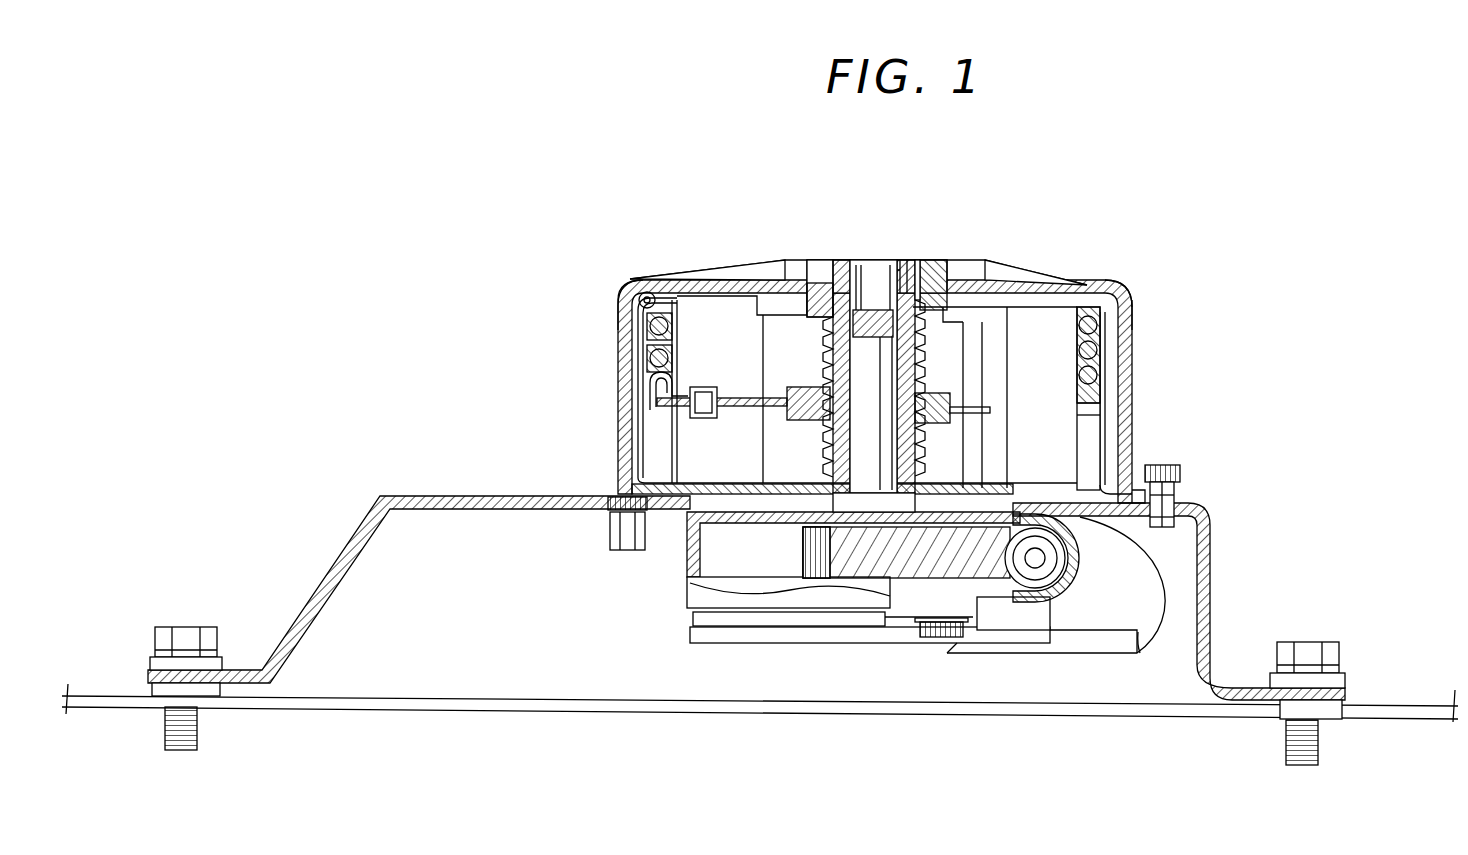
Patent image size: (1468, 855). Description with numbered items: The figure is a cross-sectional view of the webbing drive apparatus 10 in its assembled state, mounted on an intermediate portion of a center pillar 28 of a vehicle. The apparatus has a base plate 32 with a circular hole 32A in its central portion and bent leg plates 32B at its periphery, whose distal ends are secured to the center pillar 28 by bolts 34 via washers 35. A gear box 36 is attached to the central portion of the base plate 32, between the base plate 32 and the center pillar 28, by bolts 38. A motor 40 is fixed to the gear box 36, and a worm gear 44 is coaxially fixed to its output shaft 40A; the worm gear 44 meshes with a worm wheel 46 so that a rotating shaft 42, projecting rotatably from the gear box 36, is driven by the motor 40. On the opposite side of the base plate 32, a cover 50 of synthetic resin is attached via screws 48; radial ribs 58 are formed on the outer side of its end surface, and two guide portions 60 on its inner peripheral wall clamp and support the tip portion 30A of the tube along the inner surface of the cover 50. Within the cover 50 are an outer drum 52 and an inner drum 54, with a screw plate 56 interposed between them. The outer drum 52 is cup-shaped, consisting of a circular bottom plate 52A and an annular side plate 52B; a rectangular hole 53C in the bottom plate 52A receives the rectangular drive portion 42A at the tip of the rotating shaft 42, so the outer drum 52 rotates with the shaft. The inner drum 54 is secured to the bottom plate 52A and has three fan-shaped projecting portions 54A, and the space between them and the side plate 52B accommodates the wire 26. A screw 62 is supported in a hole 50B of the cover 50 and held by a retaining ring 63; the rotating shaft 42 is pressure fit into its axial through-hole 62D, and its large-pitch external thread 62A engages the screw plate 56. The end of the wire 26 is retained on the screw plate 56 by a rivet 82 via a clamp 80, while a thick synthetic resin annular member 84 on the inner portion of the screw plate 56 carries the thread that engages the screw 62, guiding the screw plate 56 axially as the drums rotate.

The webbing drive apparatus 10 is at (1165, 178).
The wire 26 is at (633, 283).
The center pillar 28 is at (1100, 714).
The tip portion of the tube 30A is at (670, 278).
The base plate 32 is at (335, 560).
The circular hole 32A is at (738, 483).
The leg plates 32B is at (240, 690).
The bolts 34 is at (186, 627).
The washers 35 is at (150, 663).
The gear box 36 is at (815, 645).
The bolts 38 is at (628, 552).
The motor 40 is at (1043, 657).
The output shaft 40A is at (1138, 632).
The rotating shaft 42 is at (800, 300).
The drive portion 42A is at (837, 500).
The worm gear 44 is at (1082, 548).
The worm wheel 46 is at (943, 605).
The screws 48 is at (1160, 463).
The cover 50 is at (737, 275).
The hole 50B is at (925, 265).
The outer drum 52 is at (1103, 395).
The bottom plate 52A is at (1077, 482).
The side plate 52B is at (1127, 438).
The rectangular hole 53C is at (867, 498).
The inner drum 54 is at (1128, 412).
The projecting portions 54A is at (700, 296).
The screw plate 56 is at (638, 306).
The ribs 58 is at (778, 268).
The guide portions 60 is at (650, 282).
The screw 62 is at (905, 270).
The external thread 62A is at (1005, 310).
The through-hole 62D is at (895, 265).
The retaining ring 63 is at (843, 255).
The clamp 80 is at (648, 398).
The rivet 82 is at (710, 392).
The annular member 84 is at (950, 400).